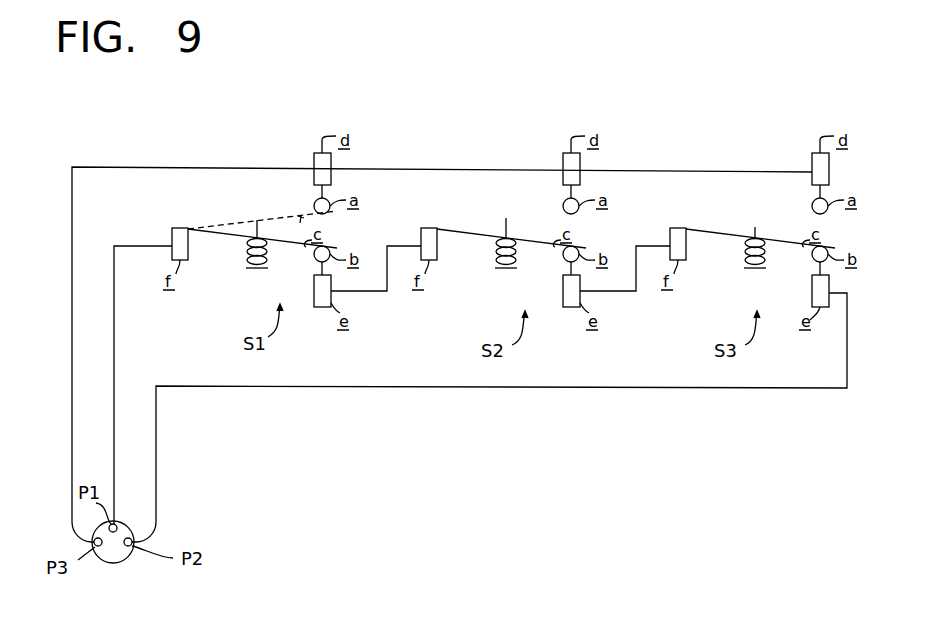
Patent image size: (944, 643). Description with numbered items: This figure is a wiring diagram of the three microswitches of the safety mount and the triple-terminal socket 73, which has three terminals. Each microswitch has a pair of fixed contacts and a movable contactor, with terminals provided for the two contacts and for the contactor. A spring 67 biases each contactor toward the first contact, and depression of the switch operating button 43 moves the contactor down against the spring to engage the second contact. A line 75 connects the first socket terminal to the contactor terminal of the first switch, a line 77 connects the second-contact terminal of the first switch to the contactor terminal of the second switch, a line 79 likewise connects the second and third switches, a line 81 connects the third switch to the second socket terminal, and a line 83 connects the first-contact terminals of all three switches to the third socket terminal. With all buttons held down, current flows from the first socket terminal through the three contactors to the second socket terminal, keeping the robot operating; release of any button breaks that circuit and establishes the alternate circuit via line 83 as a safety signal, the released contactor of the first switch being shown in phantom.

The switch operating button 43 is at (257, 221).
The spring 67 is at (249, 257).
The triple-terminal socket 73 is at (108, 566).
The line 75 is at (114, 340).
The line 77 is at (377, 291).
The line 79 is at (620, 293).
The line 81 is at (412, 387).
The line 83 is at (435, 169).